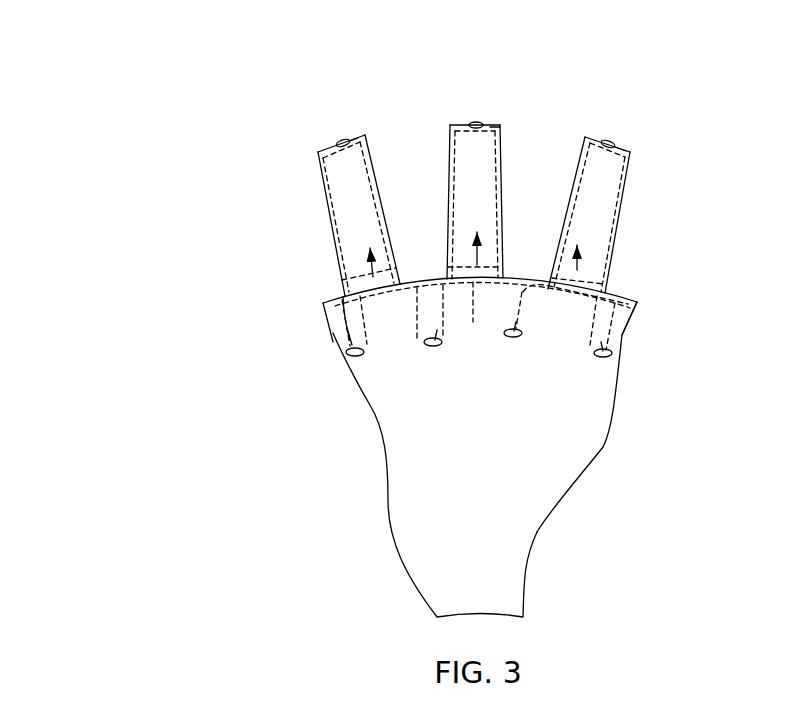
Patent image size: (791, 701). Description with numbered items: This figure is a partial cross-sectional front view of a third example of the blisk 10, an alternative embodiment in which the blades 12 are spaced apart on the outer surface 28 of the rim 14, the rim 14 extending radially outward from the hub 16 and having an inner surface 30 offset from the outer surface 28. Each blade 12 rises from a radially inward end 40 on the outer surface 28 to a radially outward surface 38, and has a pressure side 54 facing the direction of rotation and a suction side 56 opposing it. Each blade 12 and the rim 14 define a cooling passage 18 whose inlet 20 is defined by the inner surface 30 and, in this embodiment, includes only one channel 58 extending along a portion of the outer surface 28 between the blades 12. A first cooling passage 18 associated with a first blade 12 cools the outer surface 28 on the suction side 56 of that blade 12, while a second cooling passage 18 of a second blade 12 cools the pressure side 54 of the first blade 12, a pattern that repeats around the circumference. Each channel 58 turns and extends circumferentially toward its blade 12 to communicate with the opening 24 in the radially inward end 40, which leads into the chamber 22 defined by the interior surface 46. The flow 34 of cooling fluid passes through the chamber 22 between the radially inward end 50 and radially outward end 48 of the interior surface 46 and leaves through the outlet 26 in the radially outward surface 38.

The blisk 10 is at (165, 232).
The blade 12 is at (468, 150).
The rim 14 is at (252, 322).
The hub 16 is at (378, 523).
The cooling passage 18 is at (518, 97).
The inlet 20 is at (475, 370).
The chamber 22 is at (602, 223).
The opening 24 is at (449, 242).
The outlet 26 is at (457, 87).
The outer surface 28 is at (623, 293).
The inner surface 30 is at (580, 455).
The flow 34 is at (510, 229).
The radially outward surface 38 is at (511, 106).
The radially inward end 40 is at (478, 325).
The interior surface 46 is at (479, 170).
The radially outward end 48 is at (457, 102).
The radially inward end 50 is at (325, 296).
The pressure side 54 is at (431, 190).
The suction side 56 is at (517, 209).
The channel 58 is at (464, 365).